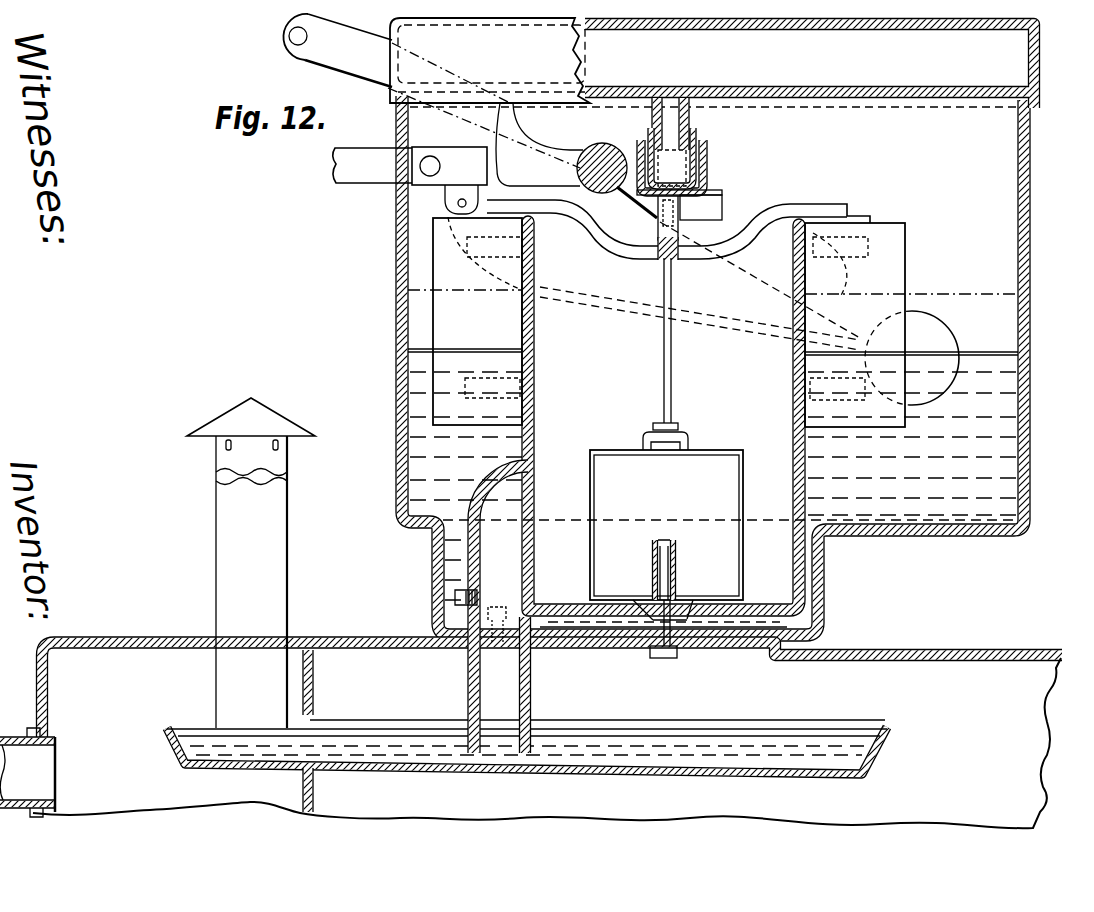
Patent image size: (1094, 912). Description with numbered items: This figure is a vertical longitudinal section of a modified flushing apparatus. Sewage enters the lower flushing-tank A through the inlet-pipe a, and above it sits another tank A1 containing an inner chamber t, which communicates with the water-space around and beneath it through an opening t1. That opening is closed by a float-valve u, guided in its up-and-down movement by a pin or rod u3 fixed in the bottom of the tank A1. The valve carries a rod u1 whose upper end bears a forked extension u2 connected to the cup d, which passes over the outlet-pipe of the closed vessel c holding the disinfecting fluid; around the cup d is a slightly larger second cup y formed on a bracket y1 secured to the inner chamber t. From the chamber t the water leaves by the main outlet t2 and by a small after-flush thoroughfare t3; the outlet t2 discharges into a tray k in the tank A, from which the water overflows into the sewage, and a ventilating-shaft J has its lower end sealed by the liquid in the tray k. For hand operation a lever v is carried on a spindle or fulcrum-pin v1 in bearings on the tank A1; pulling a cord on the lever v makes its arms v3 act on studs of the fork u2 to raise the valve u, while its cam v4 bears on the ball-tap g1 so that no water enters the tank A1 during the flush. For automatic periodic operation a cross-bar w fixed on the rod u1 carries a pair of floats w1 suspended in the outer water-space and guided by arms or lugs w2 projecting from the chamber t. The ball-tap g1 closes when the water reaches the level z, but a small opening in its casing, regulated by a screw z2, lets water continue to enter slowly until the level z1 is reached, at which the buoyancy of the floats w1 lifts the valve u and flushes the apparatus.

The flushing-tank A is at (552, 675).
The upper tank A1 is at (1030, 386).
The ventilating-shaft J is at (251, 563).
The inlet-pipe a is at (27, 772).
The tank or vessel for disinfecting fluid c is at (303, 705).
The tray k is at (518, 732).
The hand lever v is at (337, 50).
The spindle or fulcrum-pin v1 is at (602, 168).
The arms of the lever v3 is at (628, 205).
The cam v4 is at (539, 144).
The ball-tap g1 is at (410, 180).
The regulating screw z2 is at (431, 156).
The cup d is at (672, 157).
The second cup y is at (705, 169).
The bracket y1 is at (701, 208).
The forked extension u2 is at (680, 231).
The cross-bar w is at (623, 250).
The floats w1 is at (669, 322).
The guide arms or lugs w2 is at (658, 308).
The valve-rod u1 is at (673, 360).
The inner chamber t is at (537, 409).
The float-valve u is at (666, 535).
The main outlet t2 is at (491, 609).
The after-flush thoroughfare t3 is at (663, 597).
The guide pin or rod u3 is at (677, 574).
The opening t1 is at (650, 652).
The water-level when ball-tap closed z is at (959, 352).
The water-level for automatic flush z1 is at (942, 306).